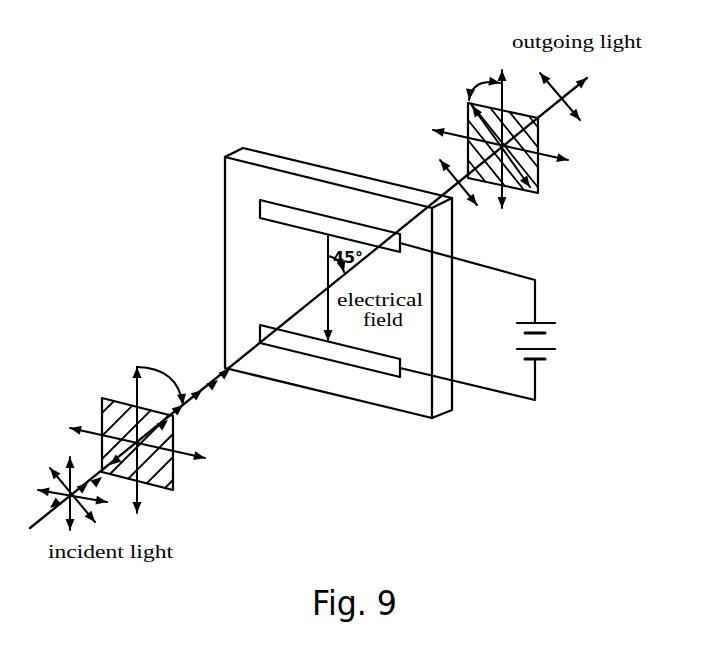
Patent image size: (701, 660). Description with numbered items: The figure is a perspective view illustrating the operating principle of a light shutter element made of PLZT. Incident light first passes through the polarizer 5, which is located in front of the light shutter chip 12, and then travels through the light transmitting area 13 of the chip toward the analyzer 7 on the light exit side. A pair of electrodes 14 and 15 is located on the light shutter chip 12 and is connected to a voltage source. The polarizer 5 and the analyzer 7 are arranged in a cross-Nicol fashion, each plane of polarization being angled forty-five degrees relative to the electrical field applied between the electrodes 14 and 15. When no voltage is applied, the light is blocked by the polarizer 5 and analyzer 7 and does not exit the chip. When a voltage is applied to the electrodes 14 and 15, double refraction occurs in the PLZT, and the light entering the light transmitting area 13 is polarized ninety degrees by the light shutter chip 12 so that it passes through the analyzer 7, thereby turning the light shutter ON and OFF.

The polarizer 5 is at (112, 397).
The analyzer 7 is at (540, 135).
The light shutter chip 12 is at (327, 167).
The light transmitting area (light shutter element) 13 is at (328, 287).
The electrode 14 is at (350, 365).
The electrode 15 is at (350, 222).